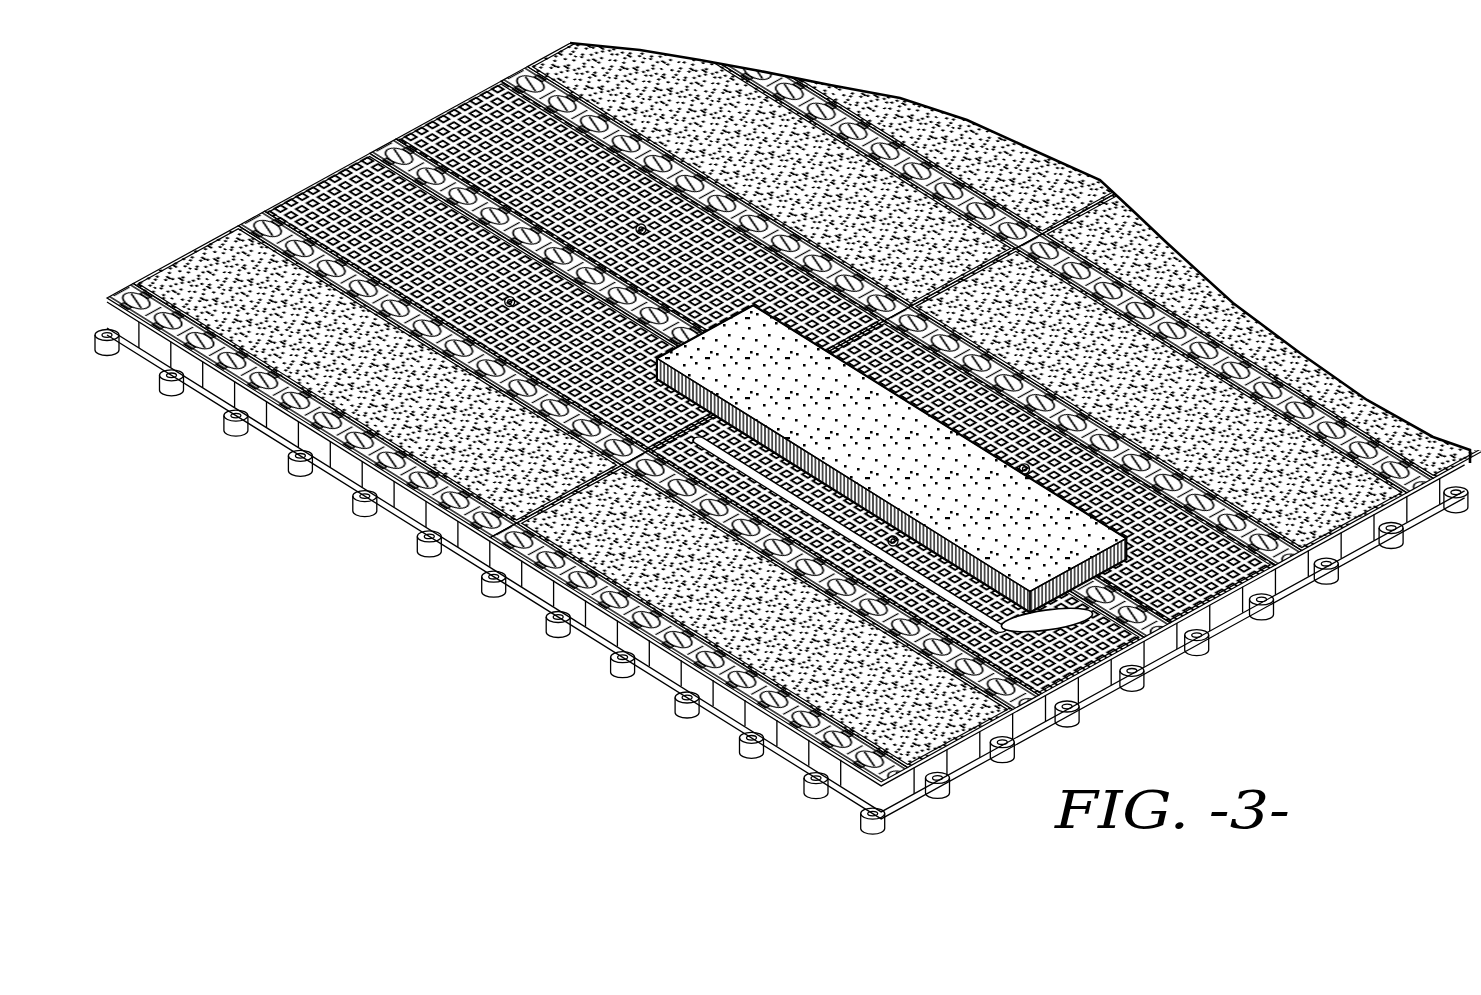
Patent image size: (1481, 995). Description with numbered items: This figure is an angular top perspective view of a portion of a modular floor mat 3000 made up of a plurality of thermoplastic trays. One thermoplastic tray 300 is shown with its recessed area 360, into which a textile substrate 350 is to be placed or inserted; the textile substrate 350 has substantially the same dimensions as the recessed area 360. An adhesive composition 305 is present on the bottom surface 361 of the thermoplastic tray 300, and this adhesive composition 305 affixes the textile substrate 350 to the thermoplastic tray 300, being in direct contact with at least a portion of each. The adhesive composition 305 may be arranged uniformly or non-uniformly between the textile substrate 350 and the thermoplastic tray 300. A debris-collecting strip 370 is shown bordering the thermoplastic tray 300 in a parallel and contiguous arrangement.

The modular floor mat 3000 is at (1212, 184).
The thermoplastic tray 300 is at (424, 126).
The adhesive composition 305 is at (1057, 628).
The textile substrate 350 is at (1143, 553).
The recessed area 360 is at (1180, 568).
The bottom surface 361 is at (493, 127).
The debris-collecting strip 370 is at (1273, 527).